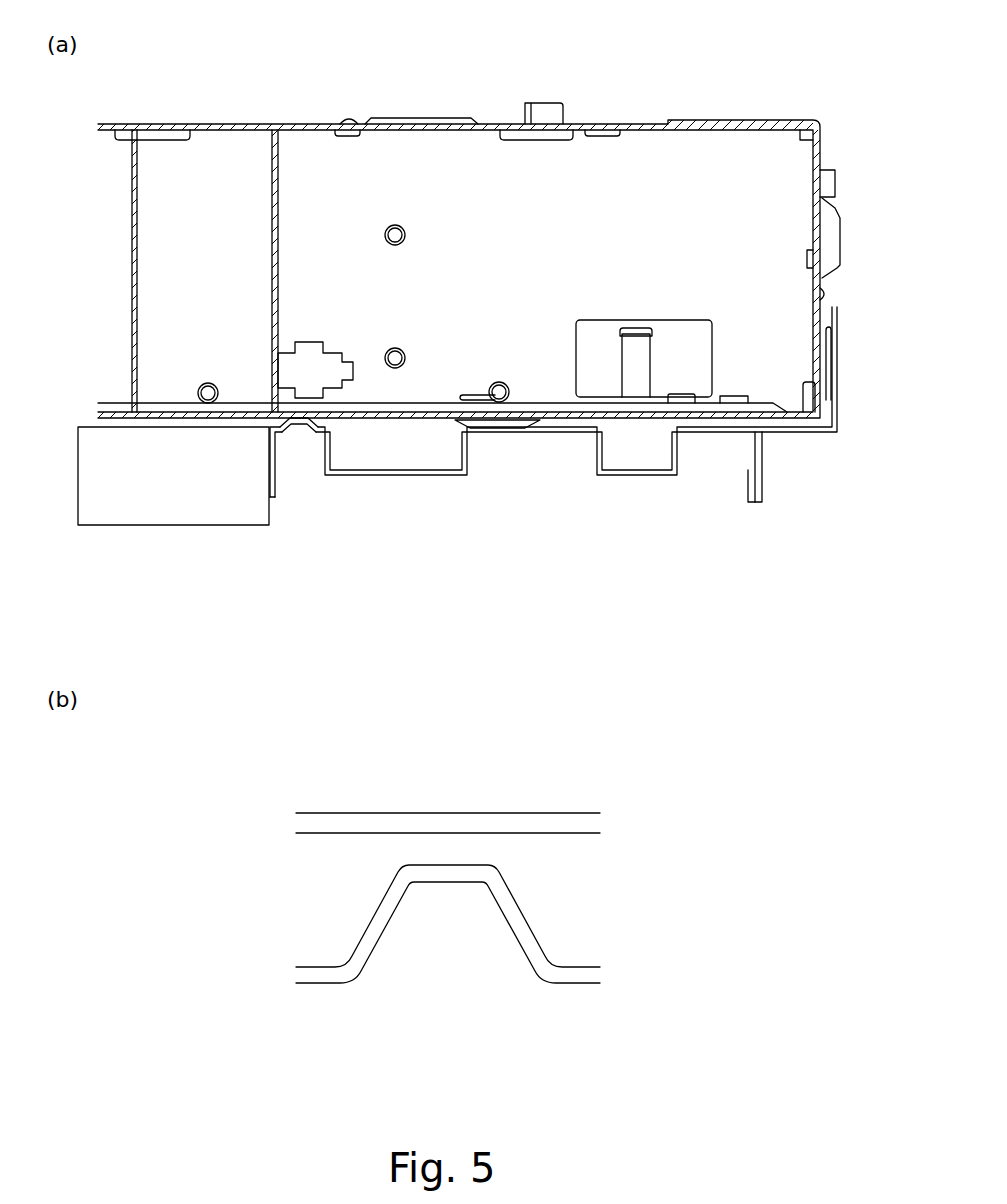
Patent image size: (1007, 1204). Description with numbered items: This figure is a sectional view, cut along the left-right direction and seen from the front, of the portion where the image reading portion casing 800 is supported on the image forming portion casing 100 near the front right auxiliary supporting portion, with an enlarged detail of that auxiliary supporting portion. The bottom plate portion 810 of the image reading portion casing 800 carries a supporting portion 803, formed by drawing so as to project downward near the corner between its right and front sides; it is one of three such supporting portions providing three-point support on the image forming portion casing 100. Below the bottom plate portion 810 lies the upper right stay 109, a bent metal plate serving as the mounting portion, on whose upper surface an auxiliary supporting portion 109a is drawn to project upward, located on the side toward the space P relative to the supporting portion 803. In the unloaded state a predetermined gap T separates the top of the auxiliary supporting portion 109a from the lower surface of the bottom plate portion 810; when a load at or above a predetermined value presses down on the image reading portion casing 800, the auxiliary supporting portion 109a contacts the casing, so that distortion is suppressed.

The image reading portion casing 800 is at (657, 102).
The supporting portion 803 is at (497, 421).
The bottom plate portion 810 is at (368, 412).
The upper right stay 109 is at (415, 476).
The auxiliary supporting portion 109a is at (298, 422).
The image forming portion casing 100 is at (792, 484).
The space P is at (116, 533).
The gap T is at (282, 421).